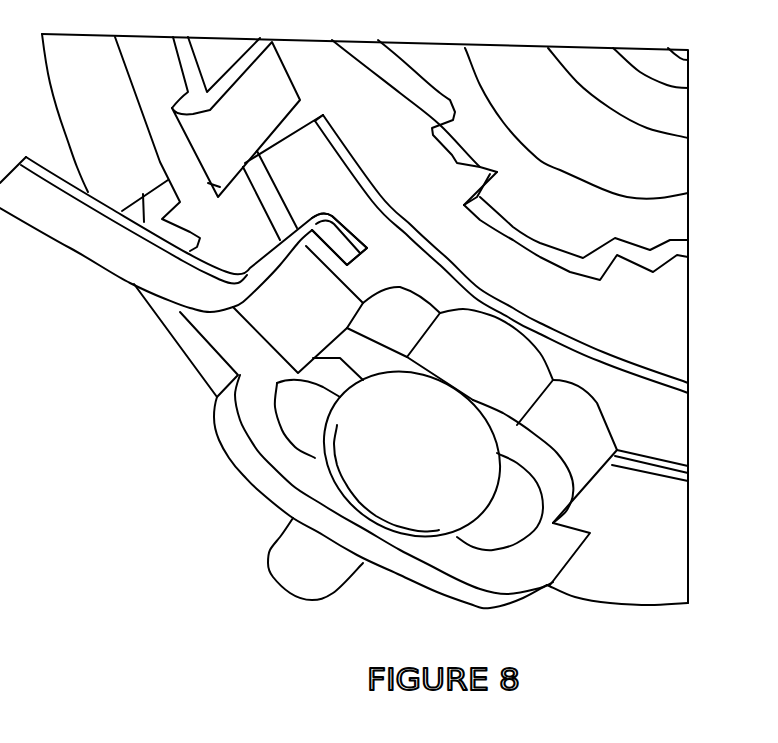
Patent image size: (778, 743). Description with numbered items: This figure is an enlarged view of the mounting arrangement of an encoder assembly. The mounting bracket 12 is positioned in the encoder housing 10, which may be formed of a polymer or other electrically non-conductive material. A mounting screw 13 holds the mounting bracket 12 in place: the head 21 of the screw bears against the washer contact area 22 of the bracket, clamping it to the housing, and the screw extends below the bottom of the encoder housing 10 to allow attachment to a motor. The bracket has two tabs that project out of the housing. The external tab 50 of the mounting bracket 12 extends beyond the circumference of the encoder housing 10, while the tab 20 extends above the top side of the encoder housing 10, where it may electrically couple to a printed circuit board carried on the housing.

The encoder housing 10 is at (645, 575).
The mounting bracket 12 is at (200, 503).
The mounting screw 13 is at (320, 560).
The tab 20 is at (333, 242).
The head 21 is at (427, 498).
The washer contact area 22 is at (285, 482).
The external tab 50 is at (62, 224).